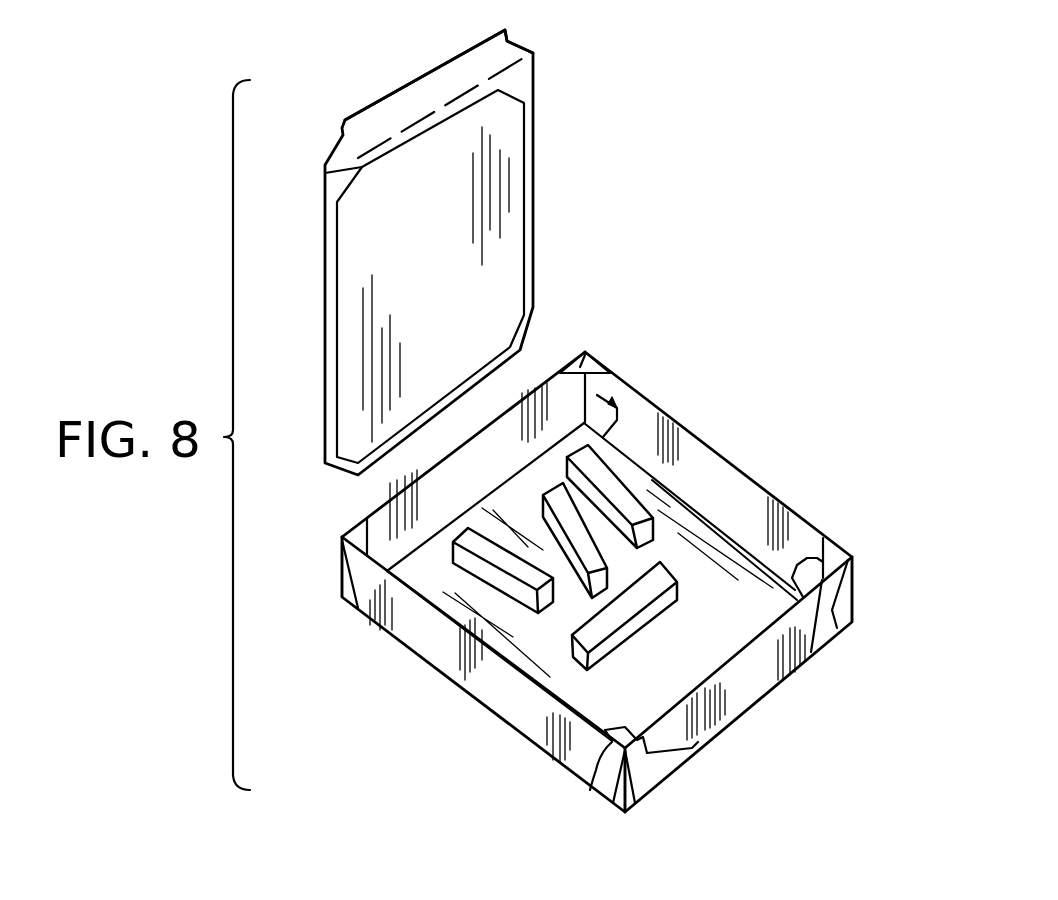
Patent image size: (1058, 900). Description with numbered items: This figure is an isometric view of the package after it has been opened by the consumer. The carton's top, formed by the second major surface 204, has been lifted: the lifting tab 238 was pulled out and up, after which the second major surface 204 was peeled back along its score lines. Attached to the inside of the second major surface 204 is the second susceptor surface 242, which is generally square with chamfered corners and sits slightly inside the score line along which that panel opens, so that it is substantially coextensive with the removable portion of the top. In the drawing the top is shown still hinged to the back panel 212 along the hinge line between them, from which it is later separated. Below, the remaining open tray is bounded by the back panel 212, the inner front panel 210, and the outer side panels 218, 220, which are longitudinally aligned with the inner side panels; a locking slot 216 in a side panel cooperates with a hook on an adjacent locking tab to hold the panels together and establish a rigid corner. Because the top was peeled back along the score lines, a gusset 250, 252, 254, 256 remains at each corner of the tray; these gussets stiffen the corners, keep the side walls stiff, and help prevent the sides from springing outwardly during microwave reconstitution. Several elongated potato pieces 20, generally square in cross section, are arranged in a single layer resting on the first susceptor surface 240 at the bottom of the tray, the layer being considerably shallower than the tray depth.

The elongated potato piece 20 is at (643, 505).
The second major surface 204 is at (482, 244).
The inner front panel 210 is at (593, 549).
The back panel 212 is at (490, 481).
The locking slot 216 is at (618, 407).
The outer side panel 218 is at (423, 635).
The outer side panel 220 is at (740, 490).
The lifting tab 238 is at (432, 90).
The first susceptor surface 240 is at (715, 649).
The second susceptor surface 242 is at (458, 287).
The gusset 250 is at (830, 558).
The gusset 252 is at (596, 790).
The gusset 254 is at (358, 535).
The gusset 256 is at (585, 350).